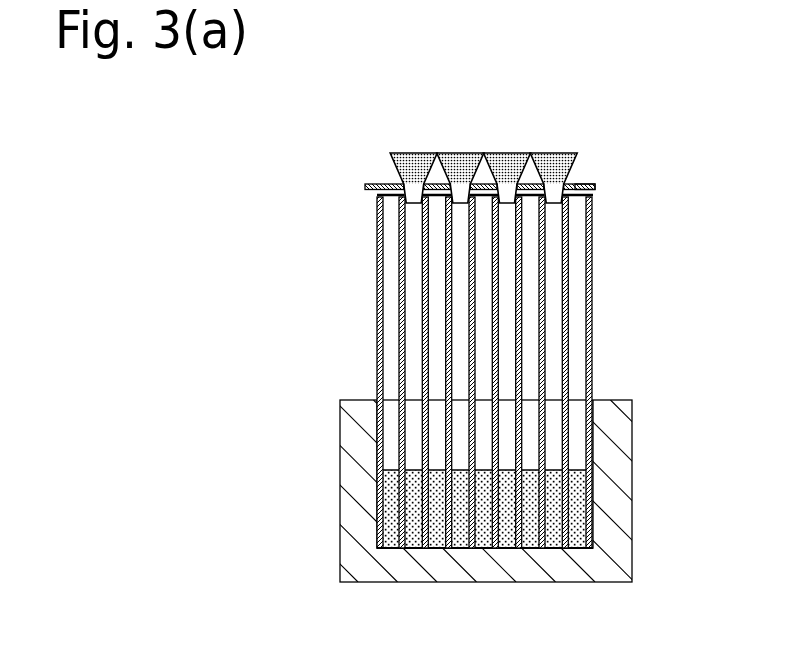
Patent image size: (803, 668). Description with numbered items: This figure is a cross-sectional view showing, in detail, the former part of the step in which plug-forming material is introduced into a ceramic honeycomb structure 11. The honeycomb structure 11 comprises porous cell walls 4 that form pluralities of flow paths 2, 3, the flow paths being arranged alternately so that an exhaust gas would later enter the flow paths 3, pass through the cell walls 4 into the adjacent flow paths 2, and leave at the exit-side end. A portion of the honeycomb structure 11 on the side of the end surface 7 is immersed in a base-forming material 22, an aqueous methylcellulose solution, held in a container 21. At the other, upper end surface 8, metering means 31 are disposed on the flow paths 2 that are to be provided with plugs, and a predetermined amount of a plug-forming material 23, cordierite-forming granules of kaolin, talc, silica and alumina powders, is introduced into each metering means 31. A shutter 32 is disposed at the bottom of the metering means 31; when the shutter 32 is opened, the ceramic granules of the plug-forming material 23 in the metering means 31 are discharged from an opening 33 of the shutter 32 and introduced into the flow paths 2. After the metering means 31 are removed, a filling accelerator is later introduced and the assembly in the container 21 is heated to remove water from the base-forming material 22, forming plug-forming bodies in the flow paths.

The flow paths 2 is at (402, 292).
The flow paths 3 is at (388, 332).
The cell walls 4 is at (568, 285).
The end surface 7 is at (535, 548).
The end surface 8 is at (575, 195).
The ceramic honeycomb structure 11 is at (479, 362).
The container 21 is at (348, 472).
The base-forming material 22 is at (418, 532).
The plug-forming material 23 is at (504, 152).
The metering means 31 is at (403, 152).
The shutter 32 is at (365, 184).
The opening 33 is at (574, 183).